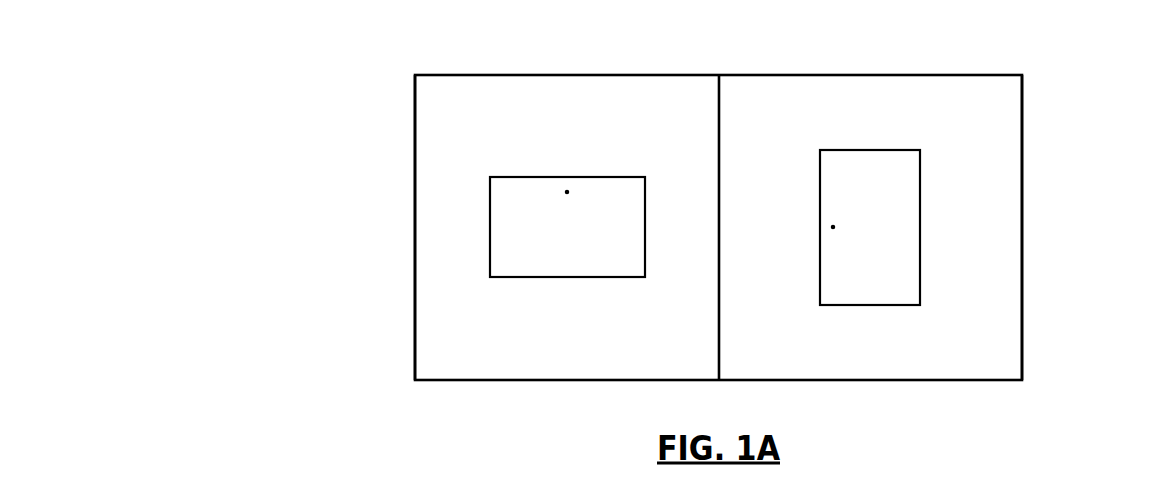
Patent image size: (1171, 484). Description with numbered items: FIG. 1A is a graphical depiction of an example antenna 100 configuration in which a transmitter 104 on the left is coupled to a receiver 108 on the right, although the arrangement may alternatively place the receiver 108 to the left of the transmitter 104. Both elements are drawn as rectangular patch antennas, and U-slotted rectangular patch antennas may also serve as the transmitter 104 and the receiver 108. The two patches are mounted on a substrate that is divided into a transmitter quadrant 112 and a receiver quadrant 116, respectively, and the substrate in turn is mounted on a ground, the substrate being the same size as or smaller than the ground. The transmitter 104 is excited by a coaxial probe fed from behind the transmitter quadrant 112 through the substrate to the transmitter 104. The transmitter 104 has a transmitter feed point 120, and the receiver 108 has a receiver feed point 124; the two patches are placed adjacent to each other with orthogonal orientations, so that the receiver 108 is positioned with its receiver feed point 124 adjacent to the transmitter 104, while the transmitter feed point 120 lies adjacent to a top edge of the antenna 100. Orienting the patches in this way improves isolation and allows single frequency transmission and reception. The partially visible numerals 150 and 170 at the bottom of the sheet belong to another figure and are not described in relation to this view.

In FIG. 1A, the antenna 100 is at (325, 57).
In FIG. 1A, the transmitter 104 is at (490, 267).
In FIG. 1A, the receiver 108 is at (920, 252).
In FIG. 1A, the transmitter quadrant 112 is at (415, 152).
In FIG. 1A, the receiver quadrant 116 is at (1022, 150).
In FIG. 1A, the transmitter feed point 120 is at (567, 192).
In FIG. 1A, the receiver feed point 124 is at (833, 227).
In FIG. 1B, the display assembly 150 is at (288, 483).
In FIG. 1B, the display region 170 is at (465, 480).